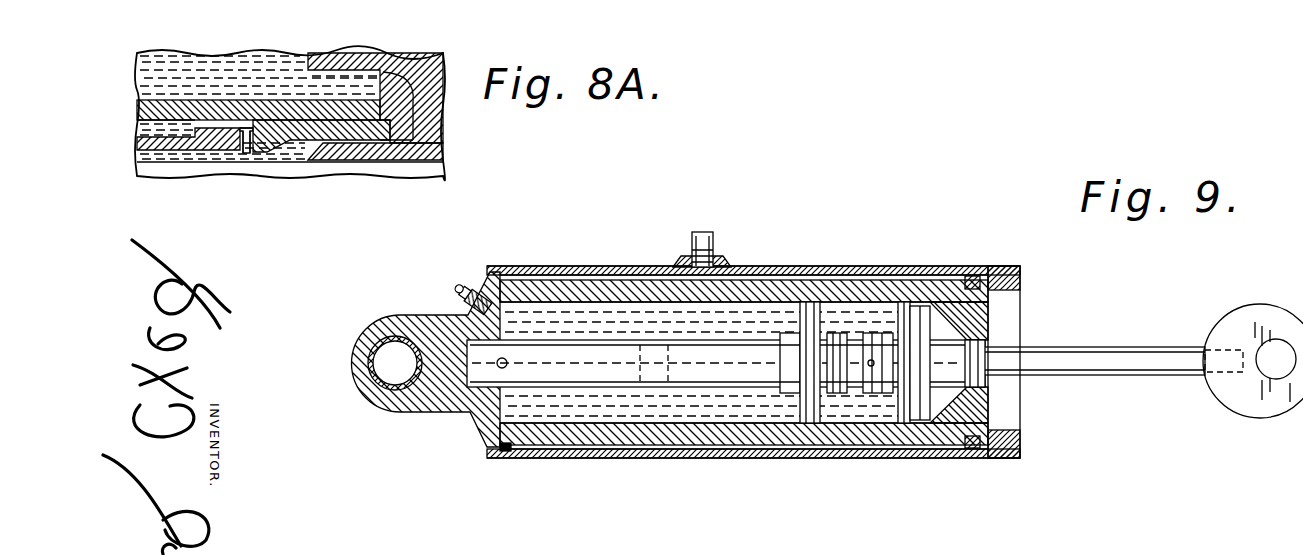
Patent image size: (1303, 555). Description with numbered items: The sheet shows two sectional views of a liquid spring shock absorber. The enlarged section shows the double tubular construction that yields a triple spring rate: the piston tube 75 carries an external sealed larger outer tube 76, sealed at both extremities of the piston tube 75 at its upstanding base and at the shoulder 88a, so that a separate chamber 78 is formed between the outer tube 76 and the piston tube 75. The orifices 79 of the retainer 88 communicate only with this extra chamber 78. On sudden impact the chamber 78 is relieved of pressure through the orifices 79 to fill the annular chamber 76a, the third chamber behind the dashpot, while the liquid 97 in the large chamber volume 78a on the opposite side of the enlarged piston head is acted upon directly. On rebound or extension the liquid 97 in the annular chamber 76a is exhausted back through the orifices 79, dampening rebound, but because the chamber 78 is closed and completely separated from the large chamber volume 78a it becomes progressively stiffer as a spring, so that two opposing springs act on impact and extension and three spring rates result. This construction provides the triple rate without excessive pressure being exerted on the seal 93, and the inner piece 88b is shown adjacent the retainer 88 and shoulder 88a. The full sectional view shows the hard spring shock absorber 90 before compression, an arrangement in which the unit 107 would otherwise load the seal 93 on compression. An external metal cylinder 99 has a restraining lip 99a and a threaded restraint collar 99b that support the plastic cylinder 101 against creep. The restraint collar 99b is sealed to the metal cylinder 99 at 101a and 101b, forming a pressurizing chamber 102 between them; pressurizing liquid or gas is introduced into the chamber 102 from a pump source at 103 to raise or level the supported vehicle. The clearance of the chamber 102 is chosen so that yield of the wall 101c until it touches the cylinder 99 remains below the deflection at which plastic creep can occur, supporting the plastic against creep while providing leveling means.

In FIG. 8A, the piston tube 75 is at (160, 142).
In FIG. 8A, the outer tube 76 is at (150, 98).
In FIG. 8A, the annular chamber 76a is at (160, 158).
In FIG. 8A, the separate chamber 78 is at (178, 133).
In FIG. 8A, the large chamber volume 78a is at (160, 62).
In FIG. 8A, the orifices 79 is at (273, 158).
In FIG. 8A, the retainer 88 is at (207, 158).
In FIG. 8A, the shoulder 88a is at (343, 158).
In FIG. 8A, the valve insert 88b is at (400, 122).
In FIG. 8A, the seal 93 is at (440, 28).
In FIG. 8A, the liquid 97 is at (215, 65).
In FIG. 9, the hydraulic cylinder assembly 90 is at (1036, 431).
In FIG. 9, the external metal cylinder 99 is at (813, 267).
In FIG. 9, the restraining lip 99a is at (478, 450).
In FIG. 9, the threaded restraint collar 99b is at (1020, 280).
In FIG. 9, the plastic cylinder 101 is at (580, 453).
In FIG. 9, the seal location 101a is at (507, 453).
In FIG. 9, the seal location 101b is at (1003, 238).
In FIG. 9, the wall 101c is at (606, 270).
In FIG. 9, the pressurizing chamber 102 is at (687, 450).
In FIG. 9, the pump source 103 is at (723, 204).
In FIG. 9, the divider plate unit 107 is at (795, 425).